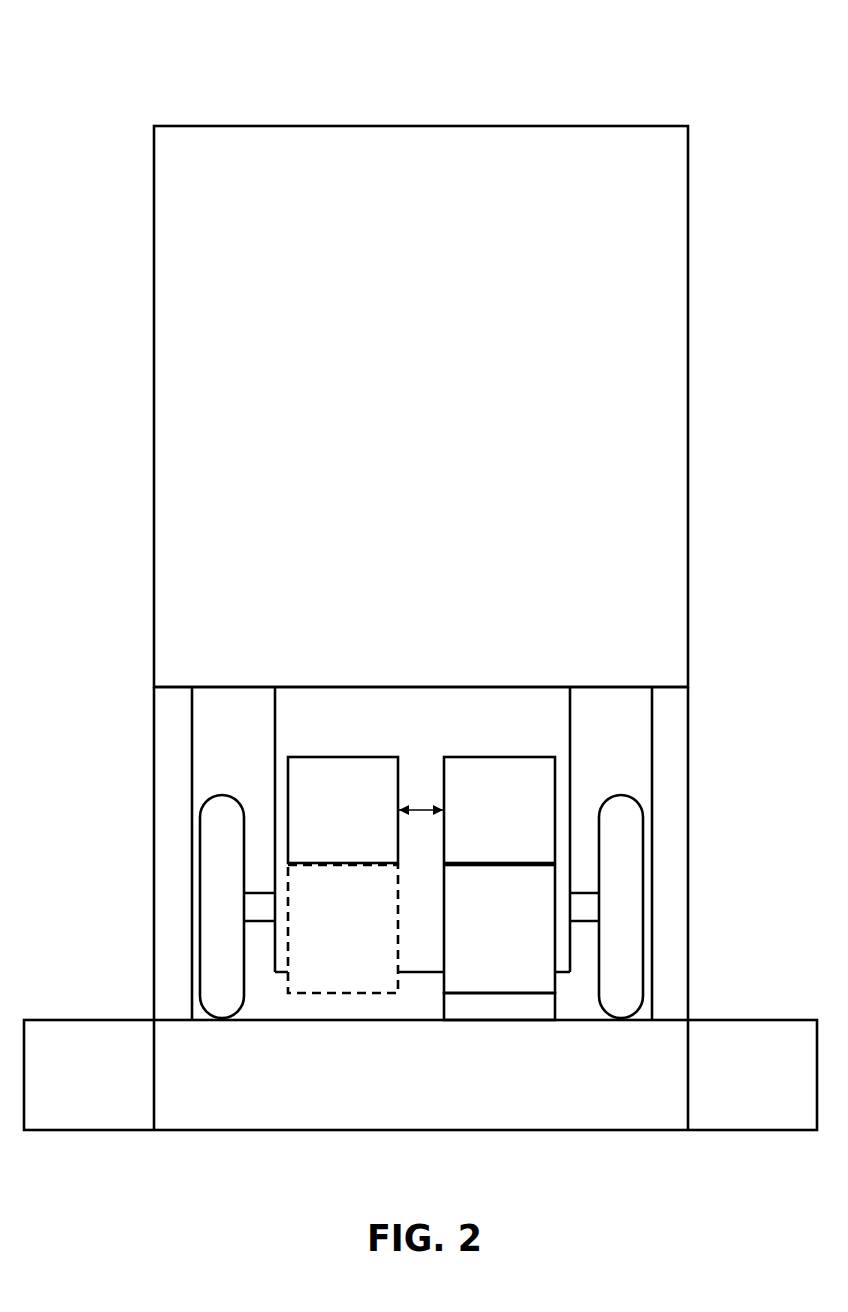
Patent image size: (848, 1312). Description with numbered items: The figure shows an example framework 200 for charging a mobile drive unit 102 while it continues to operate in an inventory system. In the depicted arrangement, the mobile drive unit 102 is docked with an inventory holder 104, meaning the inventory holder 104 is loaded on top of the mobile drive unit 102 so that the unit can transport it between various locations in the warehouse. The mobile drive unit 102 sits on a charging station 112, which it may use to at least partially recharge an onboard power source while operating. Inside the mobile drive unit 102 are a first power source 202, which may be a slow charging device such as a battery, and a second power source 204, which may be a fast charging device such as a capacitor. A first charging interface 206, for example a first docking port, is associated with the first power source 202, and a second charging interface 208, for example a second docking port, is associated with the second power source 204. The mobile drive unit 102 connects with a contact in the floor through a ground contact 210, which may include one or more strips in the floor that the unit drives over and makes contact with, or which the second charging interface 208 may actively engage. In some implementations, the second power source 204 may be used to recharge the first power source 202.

The framework 200 is at (127, 59).
The inventory holder 104 is at (439, 178).
The mobile drive unit 102 is at (439, 744).
The first power source 202 is at (360, 860).
The second power source 204 is at (517, 860).
The first charging interface 206 is at (360, 968).
The second charging interface 208 is at (517, 968).
The ground contact 210 is at (557, 1020).
The charging station 112 is at (439, 1099).